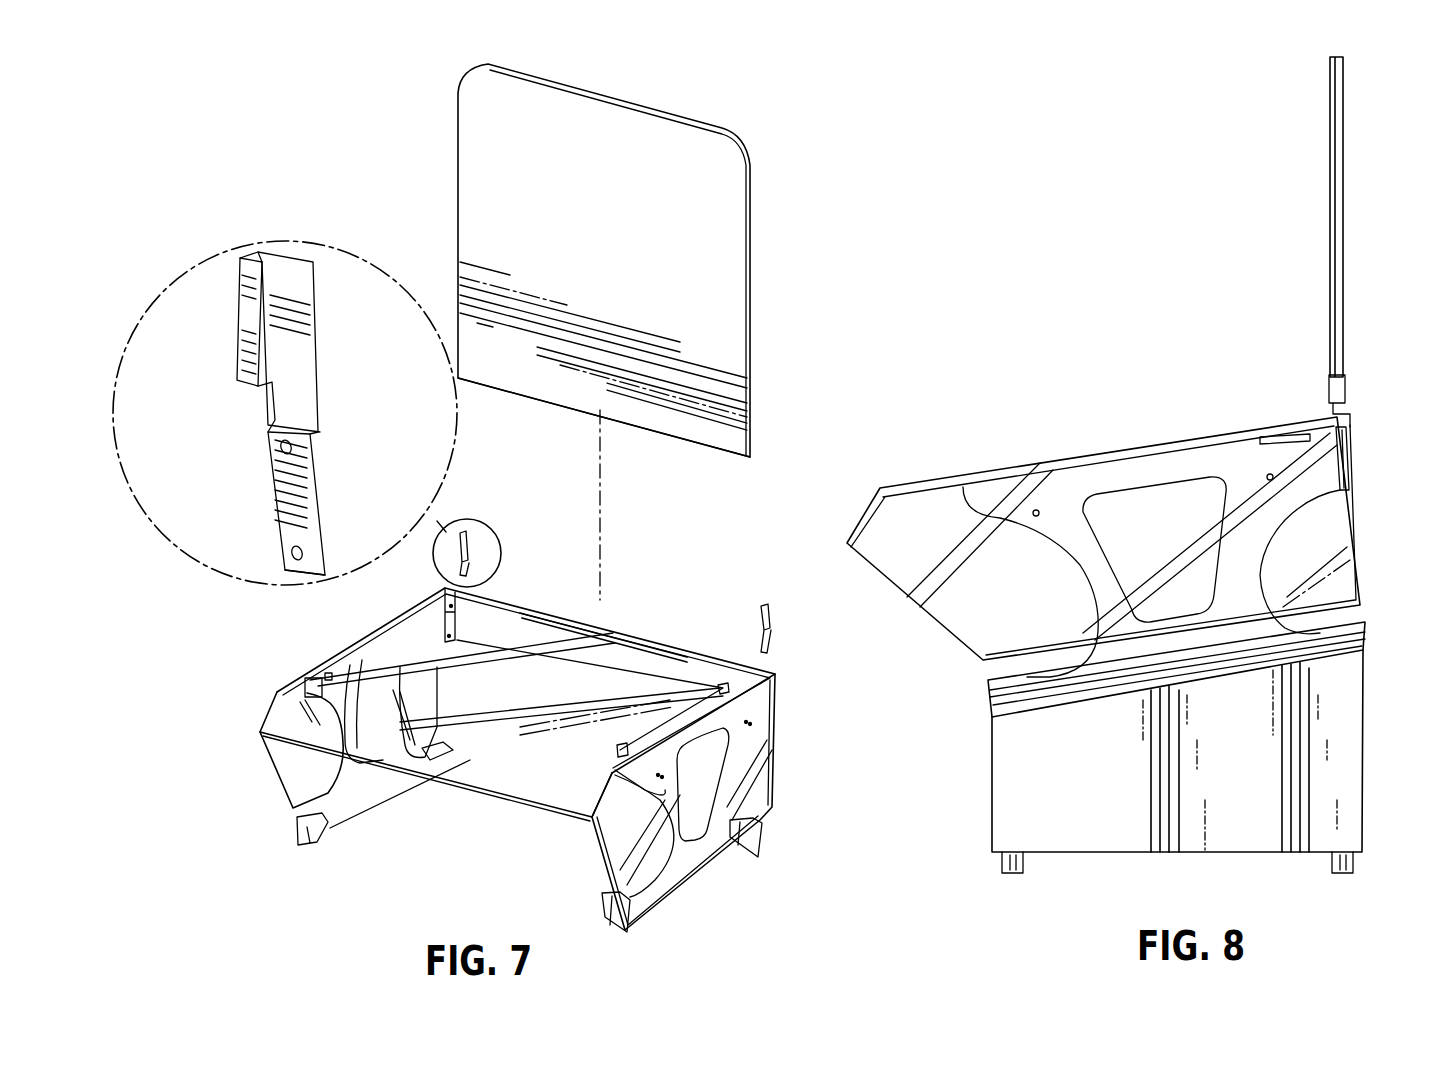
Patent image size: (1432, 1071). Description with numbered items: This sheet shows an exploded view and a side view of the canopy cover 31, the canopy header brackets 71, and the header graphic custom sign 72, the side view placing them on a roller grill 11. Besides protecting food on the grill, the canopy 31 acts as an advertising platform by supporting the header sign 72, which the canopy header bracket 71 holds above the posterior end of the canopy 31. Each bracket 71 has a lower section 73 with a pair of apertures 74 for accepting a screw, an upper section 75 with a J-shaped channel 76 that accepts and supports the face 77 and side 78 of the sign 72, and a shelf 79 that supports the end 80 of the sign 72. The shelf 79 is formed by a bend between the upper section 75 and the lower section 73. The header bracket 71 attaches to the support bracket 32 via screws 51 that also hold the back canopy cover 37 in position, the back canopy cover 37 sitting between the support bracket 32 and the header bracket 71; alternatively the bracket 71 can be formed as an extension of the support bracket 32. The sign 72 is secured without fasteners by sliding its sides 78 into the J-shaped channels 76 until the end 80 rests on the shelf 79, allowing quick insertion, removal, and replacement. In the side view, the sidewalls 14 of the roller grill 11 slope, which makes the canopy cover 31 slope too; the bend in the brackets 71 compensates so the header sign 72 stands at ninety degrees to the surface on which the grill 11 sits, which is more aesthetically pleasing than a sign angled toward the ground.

In FIG. 8, the roller grill 11 is at (1139, 465).
In FIG. 8, the sidewalls 14 is at (1022, 768).
In FIG. 7, the canopy cover 31 is at (562, 749).
In FIG. 8, the canopy cover 31 is at (992, 462).
In FIG. 7, the support bracket 32 is at (355, 802).
In FIG. 7, the back canopy cover 37 is at (648, 675).
In FIG. 7, the screws 51 is at (470, 598).
In FIG. 7, the canopy header bracket 71 is at (500, 429).
In FIG. 8, the canopy header bracket 71 is at (1345, 412).
In FIG. 7, the header graphic custom sign 72 is at (642, 332).
In FIG. 8, the header graphic custom sign 72 is at (1322, 165).
In FIG. 7, the lower section 73 is at (305, 572).
In FIG. 7, the apertures 74 is at (291, 500).
In FIG. 7, the upper section 75 is at (291, 413).
In FIG. 7, the J-shaped channel 76 is at (249, 319).
In FIG. 7, the face 77 is at (604, 260).
In FIG. 7, the side 78 is at (572, 267).
In FIG. 7, the shelf 79 is at (289, 433).
In FIG. 7, the end 80 is at (490, 390).